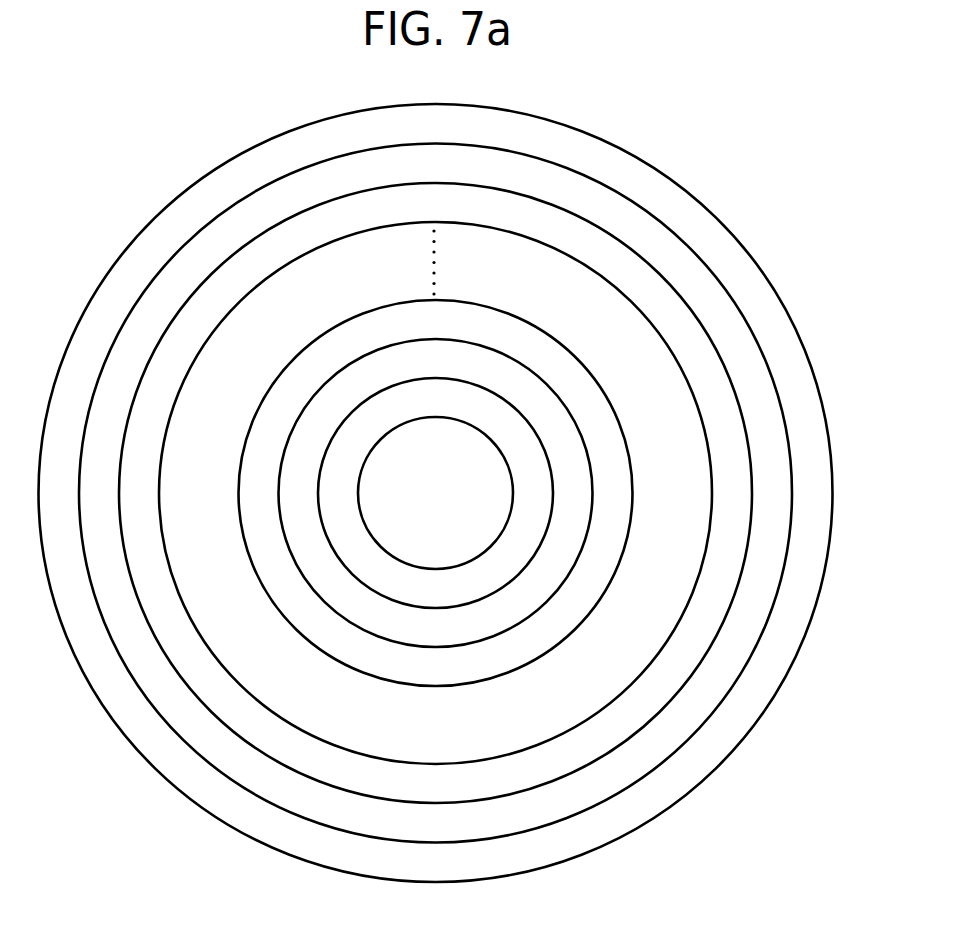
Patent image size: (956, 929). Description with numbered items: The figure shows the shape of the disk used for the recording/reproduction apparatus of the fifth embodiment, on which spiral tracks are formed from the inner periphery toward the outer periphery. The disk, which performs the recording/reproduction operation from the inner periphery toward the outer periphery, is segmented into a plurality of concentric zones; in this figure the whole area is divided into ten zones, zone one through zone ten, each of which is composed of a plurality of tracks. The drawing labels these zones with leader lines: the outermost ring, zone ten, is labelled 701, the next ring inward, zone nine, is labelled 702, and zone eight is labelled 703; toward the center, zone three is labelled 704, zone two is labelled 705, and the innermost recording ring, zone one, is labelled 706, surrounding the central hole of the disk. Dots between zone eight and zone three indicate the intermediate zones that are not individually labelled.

The zone 10 (outermost recording zone) 701 is at (497, 128).
The zone 9 702 is at (497, 168).
The zone 8 703 is at (497, 211).
The zone 3 704 is at (490, 327).
The zone 2 705 is at (490, 370).
The zone 1 (innermost recording zone) 706 is at (490, 405).